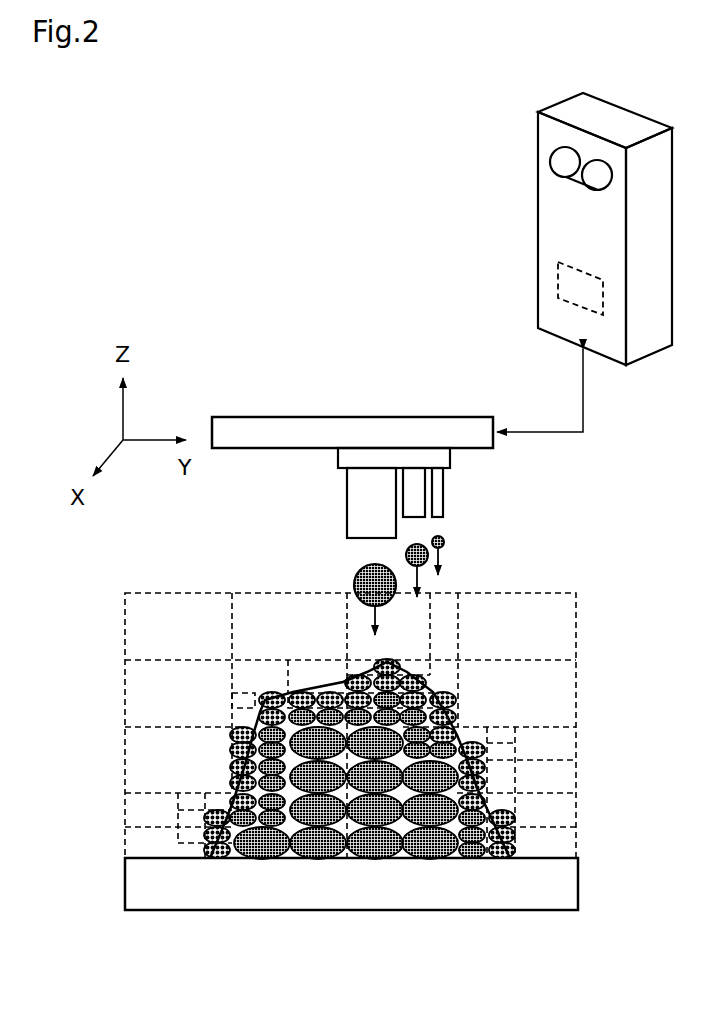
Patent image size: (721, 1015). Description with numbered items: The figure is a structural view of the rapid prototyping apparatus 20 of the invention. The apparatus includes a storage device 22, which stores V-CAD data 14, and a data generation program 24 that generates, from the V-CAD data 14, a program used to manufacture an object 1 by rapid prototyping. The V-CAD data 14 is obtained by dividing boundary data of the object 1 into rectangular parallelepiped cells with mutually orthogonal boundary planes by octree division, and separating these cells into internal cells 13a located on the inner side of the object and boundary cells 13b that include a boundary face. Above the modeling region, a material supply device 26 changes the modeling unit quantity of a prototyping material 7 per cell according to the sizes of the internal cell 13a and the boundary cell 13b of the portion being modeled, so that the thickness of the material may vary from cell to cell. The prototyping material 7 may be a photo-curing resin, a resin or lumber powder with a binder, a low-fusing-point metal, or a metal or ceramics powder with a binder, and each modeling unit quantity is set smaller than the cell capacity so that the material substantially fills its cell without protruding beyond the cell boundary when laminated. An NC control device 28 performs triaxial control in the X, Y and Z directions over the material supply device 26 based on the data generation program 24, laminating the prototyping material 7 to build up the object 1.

The object 1 is at (462, 738).
The prototyping material 7 is at (360, 582).
The internal cell 13a is at (320, 855).
The boundary cell 13b is at (515, 815).
The V-CAD data 14 is at (113, 675).
The rapid prototyping apparatus 20 is at (230, 272).
The storage device 22 is at (557, 297).
The data generation program 24 is at (580, 288).
The material supply device 26 is at (265, 413).
The NC control device 28 is at (550, 235).